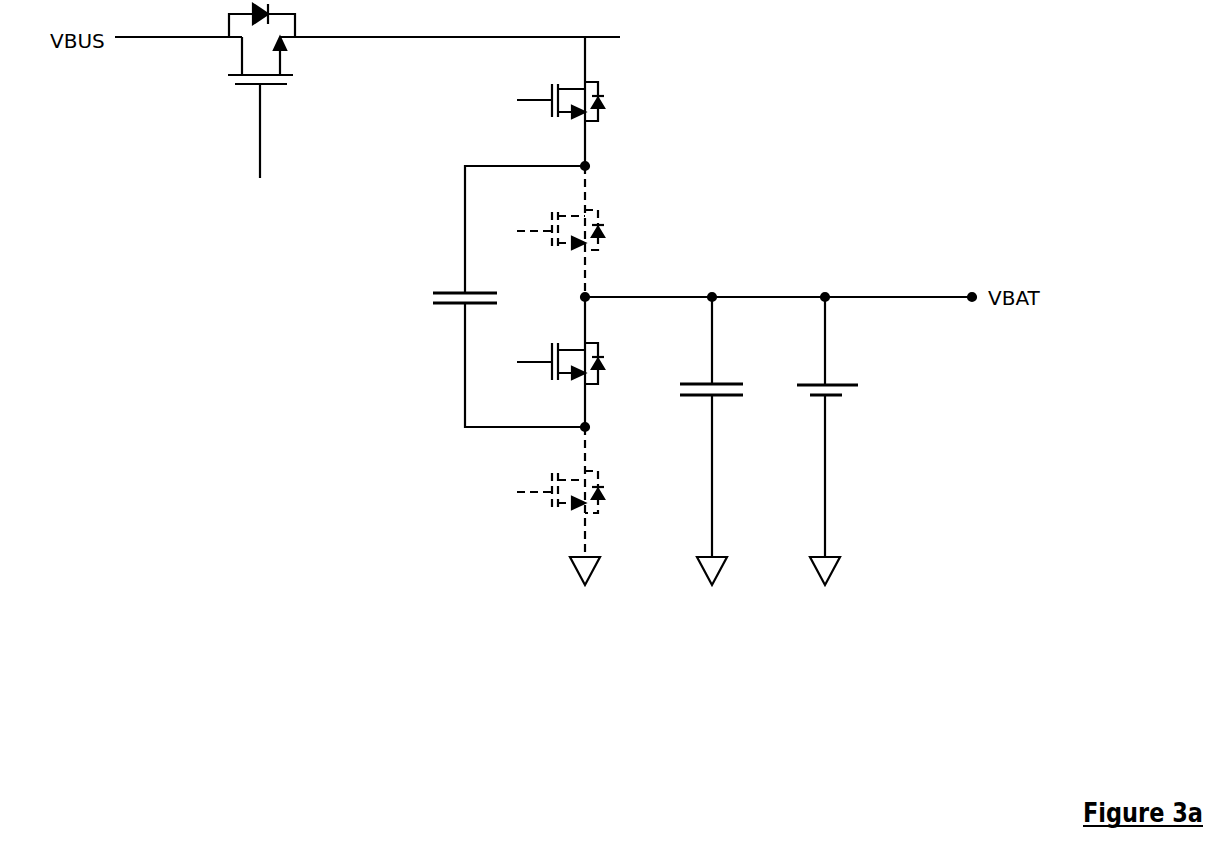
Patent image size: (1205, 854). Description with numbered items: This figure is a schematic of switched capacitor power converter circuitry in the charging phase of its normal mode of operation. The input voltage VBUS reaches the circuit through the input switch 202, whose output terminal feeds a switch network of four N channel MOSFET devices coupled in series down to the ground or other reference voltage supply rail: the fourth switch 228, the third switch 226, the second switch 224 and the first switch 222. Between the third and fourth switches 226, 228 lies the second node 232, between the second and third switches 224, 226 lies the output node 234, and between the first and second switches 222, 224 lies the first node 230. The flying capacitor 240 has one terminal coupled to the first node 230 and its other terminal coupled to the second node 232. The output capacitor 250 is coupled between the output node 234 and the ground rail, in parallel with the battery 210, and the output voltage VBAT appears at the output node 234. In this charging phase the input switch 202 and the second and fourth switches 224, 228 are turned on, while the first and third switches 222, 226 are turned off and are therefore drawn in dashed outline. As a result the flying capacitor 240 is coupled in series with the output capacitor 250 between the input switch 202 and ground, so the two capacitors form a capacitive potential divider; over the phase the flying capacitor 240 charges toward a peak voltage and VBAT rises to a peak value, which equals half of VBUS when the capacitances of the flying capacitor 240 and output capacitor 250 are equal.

The input switch 202 is at (278, 84).
The fourth switch 228 is at (570, 114).
The third switch 226 is at (573, 245).
The second switch 224 is at (573, 376).
The first switch 222 is at (573, 505).
The second node 232 is at (585, 166).
The output node 234 is at (585, 297).
The first node 230 is at (585, 427).
The flying capacitor 240 is at (453, 293).
The output capacitor 250 is at (728, 395).
The battery 210 is at (832, 395).